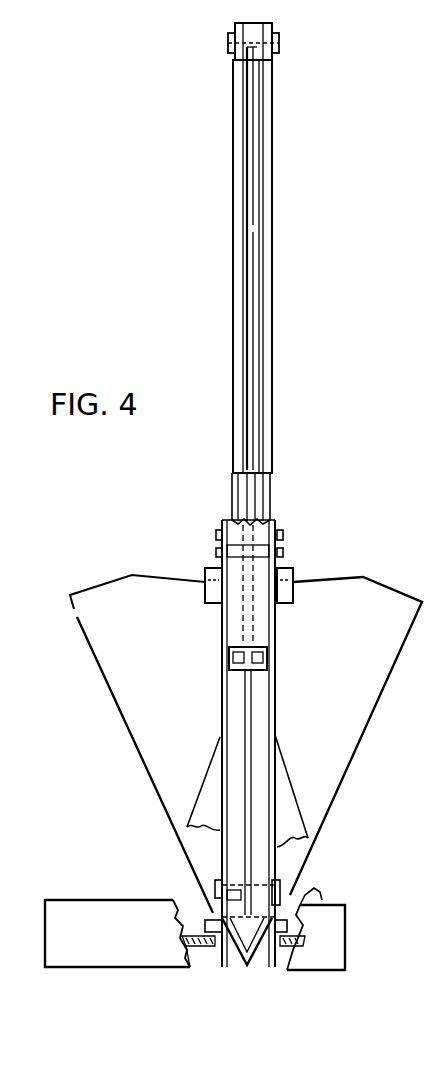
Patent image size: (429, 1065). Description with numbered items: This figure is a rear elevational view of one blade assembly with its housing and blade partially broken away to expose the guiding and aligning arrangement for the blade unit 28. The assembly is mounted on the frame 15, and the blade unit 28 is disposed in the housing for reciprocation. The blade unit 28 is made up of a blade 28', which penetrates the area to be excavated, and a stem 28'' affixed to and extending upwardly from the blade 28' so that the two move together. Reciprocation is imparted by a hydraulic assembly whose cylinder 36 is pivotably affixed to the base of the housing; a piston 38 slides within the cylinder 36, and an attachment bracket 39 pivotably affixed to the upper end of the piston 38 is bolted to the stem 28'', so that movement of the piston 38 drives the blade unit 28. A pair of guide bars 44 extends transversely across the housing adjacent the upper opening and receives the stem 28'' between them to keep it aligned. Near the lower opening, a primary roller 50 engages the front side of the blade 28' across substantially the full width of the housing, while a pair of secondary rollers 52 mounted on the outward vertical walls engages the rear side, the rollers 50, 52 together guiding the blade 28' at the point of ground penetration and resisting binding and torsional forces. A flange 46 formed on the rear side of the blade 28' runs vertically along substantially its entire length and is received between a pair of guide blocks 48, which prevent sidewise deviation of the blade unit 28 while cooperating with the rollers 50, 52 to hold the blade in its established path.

The frame 15 is at (113, 958).
The blade unit 28 is at (289, 266).
The blade 28' is at (229, 744).
The stem 28'' is at (185, 350).
The cylinder 36 is at (233, 485).
The piston 38 is at (250, 178).
The attachment bracket 39 is at (233, 26).
The guide bars 44 is at (216, 535).
The flange 46 is at (253, 700).
The guide blocks 48 is at (225, 885).
The primary roller 50 is at (280, 893).
The secondary rollers 52 is at (215, 950).